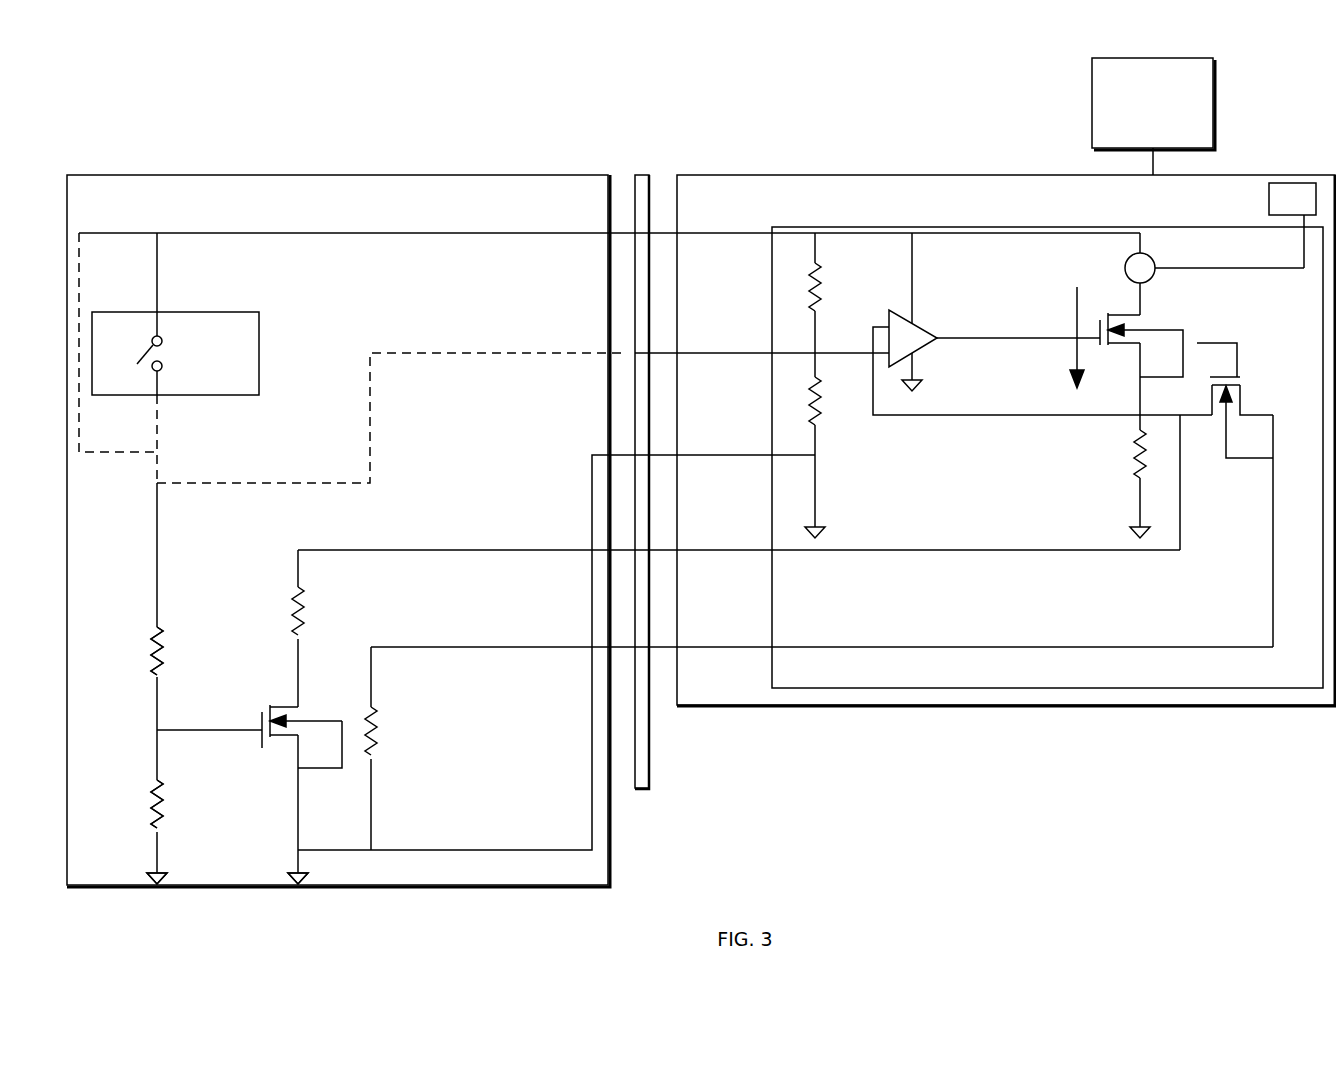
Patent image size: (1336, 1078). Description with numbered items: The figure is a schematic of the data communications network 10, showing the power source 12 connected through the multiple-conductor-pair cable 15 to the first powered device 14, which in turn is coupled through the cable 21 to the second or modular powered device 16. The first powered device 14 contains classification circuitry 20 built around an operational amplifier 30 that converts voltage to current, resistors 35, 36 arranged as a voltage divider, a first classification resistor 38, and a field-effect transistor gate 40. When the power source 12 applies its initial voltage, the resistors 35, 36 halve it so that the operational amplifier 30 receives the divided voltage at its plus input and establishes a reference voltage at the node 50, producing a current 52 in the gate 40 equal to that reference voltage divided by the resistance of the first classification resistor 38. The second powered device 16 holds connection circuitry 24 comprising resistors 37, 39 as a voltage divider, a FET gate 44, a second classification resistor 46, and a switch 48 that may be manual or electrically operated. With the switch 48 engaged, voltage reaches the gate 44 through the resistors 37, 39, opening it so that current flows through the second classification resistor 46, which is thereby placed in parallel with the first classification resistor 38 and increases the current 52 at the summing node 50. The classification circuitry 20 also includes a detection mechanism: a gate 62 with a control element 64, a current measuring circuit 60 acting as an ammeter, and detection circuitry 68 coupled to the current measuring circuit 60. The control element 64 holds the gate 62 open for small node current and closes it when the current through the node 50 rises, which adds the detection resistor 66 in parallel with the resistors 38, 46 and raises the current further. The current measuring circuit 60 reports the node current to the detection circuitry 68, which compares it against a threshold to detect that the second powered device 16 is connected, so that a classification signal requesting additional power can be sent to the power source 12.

The data communications network 10 is at (168, 88).
The power source 12 is at (1153, 104).
The first powered device 14 is at (714, 175).
The multiple-conductor-pair cable 15 is at (1150, 162).
The second or modular powered device 16 is at (185, 175).
The classification circuitry 20 is at (847, 227).
The cable 21 is at (640, 175).
The connection circuitry 24 is at (246, 835).
The operational amplifier 30 is at (888, 316).
The resistor 35 is at (843, 440).
The resistor 36 is at (838, 275).
The resistor 37 is at (148, 790).
The first classification resistor (RCLASS1) 38 is at (1120, 470).
The resistor 39 is at (148, 630).
The field-effect transistor gate 40 is at (1186, 318).
The FET gate 44 is at (320, 776).
The second classification resistor (RCLASS2) 46 is at (288, 582).
The switch 48 is at (194, 312).
The node 50 is at (1150, 405).
The current 52 is at (1077, 300).
The current measuring circuit 60 is at (1160, 260).
The gate 62 is at (1223, 470).
The control element 64 is at (1250, 320).
The detection resistor (RDETECT) 66 is at (386, 766).
The detection circuitry 68 is at (1292, 225).